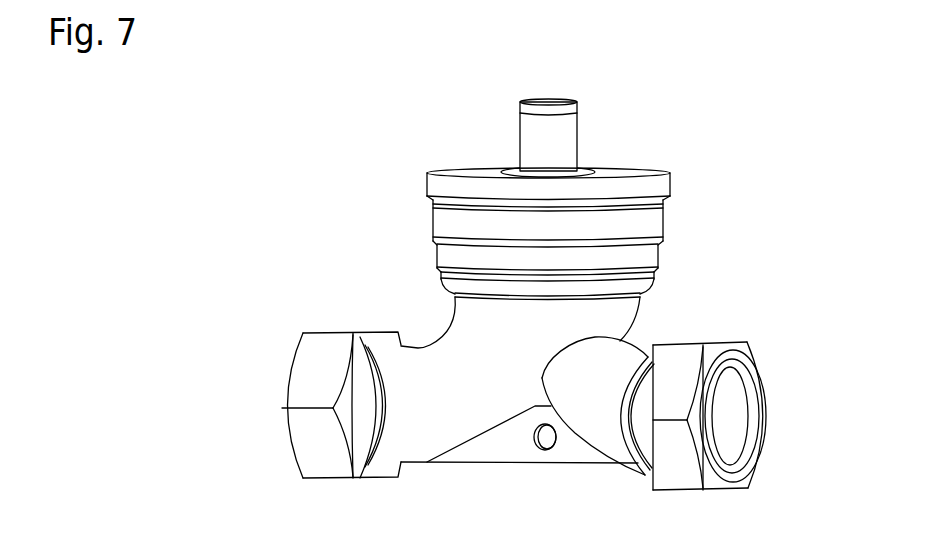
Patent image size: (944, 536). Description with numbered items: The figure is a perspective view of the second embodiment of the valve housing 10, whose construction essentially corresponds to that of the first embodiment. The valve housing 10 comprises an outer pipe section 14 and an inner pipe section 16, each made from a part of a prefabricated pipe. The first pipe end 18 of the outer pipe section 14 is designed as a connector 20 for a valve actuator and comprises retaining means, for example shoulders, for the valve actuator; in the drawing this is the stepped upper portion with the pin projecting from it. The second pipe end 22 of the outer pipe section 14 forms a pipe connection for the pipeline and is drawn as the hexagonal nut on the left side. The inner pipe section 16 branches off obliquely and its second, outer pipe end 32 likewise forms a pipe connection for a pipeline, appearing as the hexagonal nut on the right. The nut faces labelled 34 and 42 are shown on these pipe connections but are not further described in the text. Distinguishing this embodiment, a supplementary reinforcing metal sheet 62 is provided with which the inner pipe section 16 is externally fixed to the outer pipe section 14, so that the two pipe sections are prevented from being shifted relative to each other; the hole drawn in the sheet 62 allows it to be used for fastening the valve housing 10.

The valve housing 10 is at (766, 147).
The outer pipe section 14 is at (610, 360).
The inner pipe section 16 is at (413, 432).
The first pipe end 18 is at (650, 223).
The connector 20 is at (652, 158).
The second pipe end 22 is at (304, 458).
The second, outer pipe end 32 is at (653, 463).
The union nut 34 is at (286, 385).
The nut opening 42 is at (765, 443).
The reinforcing metal sheet 62 is at (515, 453).